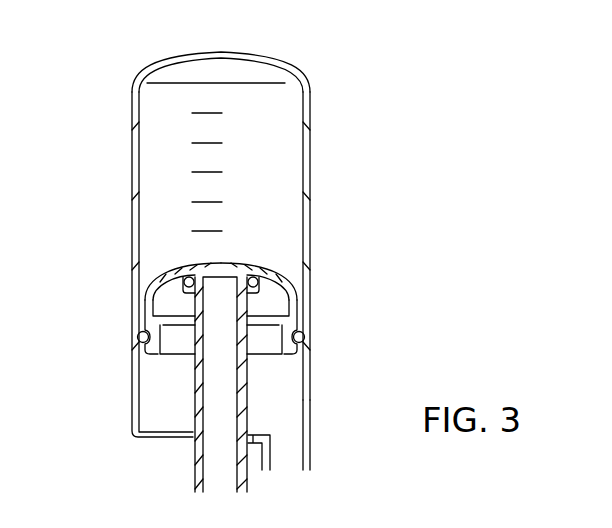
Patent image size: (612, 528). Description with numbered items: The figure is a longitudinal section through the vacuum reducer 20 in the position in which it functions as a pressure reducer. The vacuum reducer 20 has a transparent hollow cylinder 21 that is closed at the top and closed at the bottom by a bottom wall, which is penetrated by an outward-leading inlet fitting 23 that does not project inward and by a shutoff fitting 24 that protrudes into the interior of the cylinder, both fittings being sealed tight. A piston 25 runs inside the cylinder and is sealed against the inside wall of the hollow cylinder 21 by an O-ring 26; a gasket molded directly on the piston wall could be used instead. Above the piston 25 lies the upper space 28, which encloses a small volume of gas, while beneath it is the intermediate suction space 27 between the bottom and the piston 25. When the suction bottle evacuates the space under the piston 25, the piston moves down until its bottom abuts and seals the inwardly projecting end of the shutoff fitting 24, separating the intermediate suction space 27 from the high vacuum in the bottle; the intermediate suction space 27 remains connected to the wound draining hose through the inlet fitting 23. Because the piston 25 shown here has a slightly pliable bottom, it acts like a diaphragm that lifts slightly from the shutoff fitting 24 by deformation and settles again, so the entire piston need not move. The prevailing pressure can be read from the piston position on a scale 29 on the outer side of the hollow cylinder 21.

The vacuum reducer 20 is at (388, 63).
The hollow cylinder 21 is at (131, 134).
The inlet fitting 23 is at (287, 457).
The shutoff fitting 24 is at (218, 475).
The piston 25 is at (228, 262).
The O-ring 26 is at (261, 282).
The intermediate suction space 27 is at (278, 400).
The upper space 28 is at (283, 190).
The scale 29 is at (213, 142).